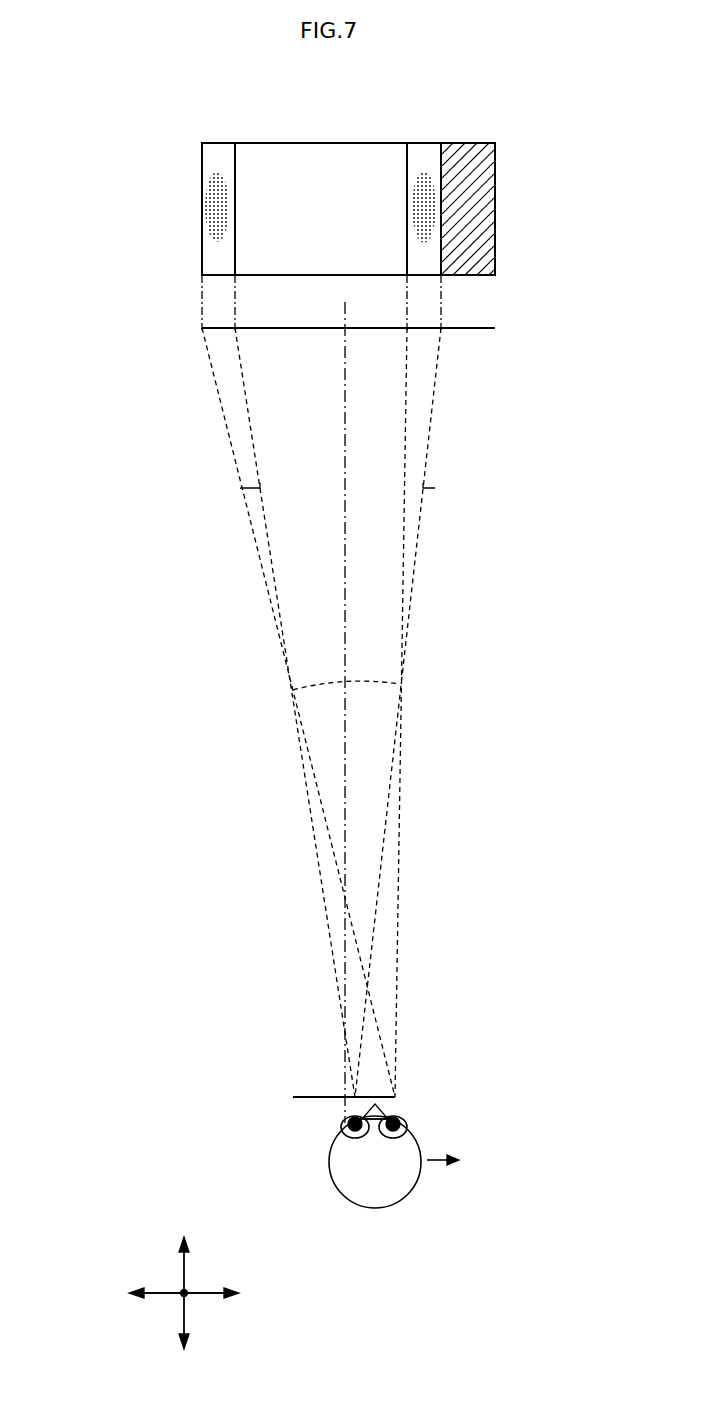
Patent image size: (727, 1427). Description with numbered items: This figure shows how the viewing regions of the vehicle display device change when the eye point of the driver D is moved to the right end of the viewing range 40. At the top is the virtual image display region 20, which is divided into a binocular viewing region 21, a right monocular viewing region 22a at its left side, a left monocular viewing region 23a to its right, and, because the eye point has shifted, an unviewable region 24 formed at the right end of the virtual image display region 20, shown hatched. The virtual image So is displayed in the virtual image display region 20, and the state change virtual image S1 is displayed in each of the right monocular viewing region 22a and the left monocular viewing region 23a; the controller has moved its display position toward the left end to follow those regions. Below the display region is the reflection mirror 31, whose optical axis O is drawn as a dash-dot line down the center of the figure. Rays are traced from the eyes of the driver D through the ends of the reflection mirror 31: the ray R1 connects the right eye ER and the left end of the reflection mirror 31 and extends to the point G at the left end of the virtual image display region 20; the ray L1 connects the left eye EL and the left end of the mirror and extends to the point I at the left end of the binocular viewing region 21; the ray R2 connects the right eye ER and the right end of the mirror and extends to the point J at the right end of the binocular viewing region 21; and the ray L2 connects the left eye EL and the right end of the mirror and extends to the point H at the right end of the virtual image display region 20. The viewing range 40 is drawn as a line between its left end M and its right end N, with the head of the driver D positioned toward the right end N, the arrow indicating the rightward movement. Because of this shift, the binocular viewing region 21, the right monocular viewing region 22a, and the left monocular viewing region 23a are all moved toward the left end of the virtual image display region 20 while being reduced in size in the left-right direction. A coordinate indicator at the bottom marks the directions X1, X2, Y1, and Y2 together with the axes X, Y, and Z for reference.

The binocular viewing region 21 is at (331, 165).
The right monocular viewing region 22a is at (213, 161).
The left monocular viewing region 23a is at (425, 163).
The unviewable region 24 is at (480, 168).
The state change virtual image S1 is at (325, 149).
The virtual image So is at (224, 176).
The left end of virtual image display region G is at (202, 232).
The left end of binocular viewing region I is at (236, 253).
The right end of virtual image display region H is at (407, 258).
The right end of binocular viewing region J is at (442, 267).
The virtual image display region 20 is at (516, 279).
The optical axis O is at (346, 578).
The ray R1 is at (224, 440).
The ray R2 is at (405, 447).
The ray L1 is at (240, 488).
The ray L2 is at (435, 488).
The reflection mirror 31 is at (400, 684).
The viewing range 40 is at (304, 1090).
The left end of viewing range M is at (293, 1097).
The right end of viewing range N is at (395, 1097).
The driver D is at (330, 1178).
The left eye EL is at (343, 1122).
The right eye ER is at (406, 1118).
The X1 direction X1 is at (140, 1294).
The X2 direction X2 is at (229, 1294).
The Y1 direction Y1 is at (185, 1253).
The Y2 direction Y2 is at (185, 1334).
The X axis X is at (203, 1296).
The Y axis Y is at (185, 1266).
The Z axis Z is at (179, 1300).